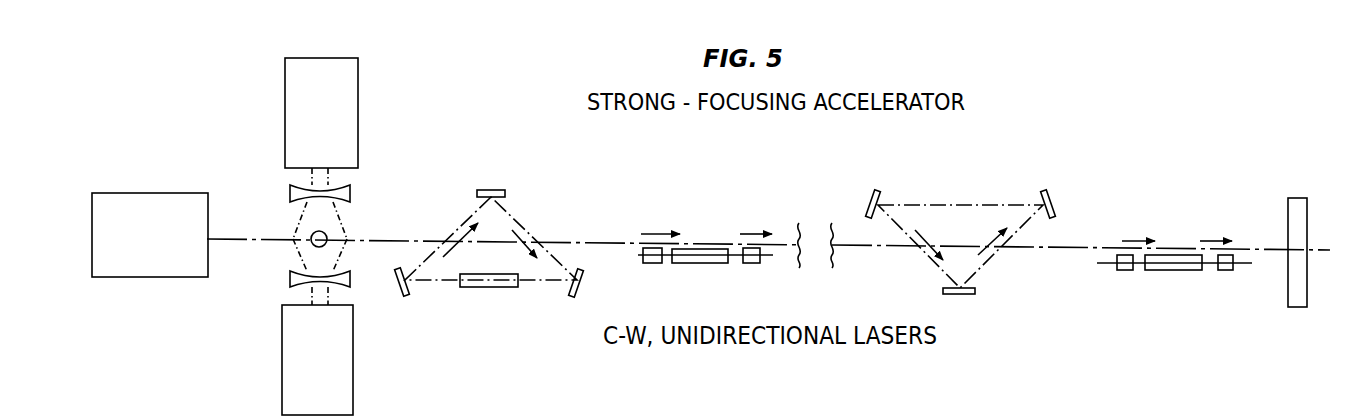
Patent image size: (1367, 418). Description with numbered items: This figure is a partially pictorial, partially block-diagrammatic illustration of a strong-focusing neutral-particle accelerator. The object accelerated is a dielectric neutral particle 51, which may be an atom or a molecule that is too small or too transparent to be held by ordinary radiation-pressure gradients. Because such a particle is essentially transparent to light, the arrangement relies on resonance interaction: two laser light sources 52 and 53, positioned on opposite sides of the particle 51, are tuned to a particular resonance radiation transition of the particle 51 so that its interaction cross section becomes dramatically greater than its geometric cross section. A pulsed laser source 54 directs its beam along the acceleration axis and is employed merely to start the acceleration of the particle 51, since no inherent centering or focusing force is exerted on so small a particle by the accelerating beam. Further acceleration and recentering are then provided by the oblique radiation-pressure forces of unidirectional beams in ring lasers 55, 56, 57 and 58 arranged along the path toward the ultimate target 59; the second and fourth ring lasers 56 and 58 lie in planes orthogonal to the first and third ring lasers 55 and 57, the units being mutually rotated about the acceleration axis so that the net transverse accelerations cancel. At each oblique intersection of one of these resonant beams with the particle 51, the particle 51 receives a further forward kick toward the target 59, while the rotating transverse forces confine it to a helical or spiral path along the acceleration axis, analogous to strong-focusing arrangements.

The dielectric neutral particle 51 is at (262, 295).
The laser light source 52 is at (358, 90).
The laser light source 53 is at (353, 385).
The pulsed laser source 54 is at (182, 196).
The ring laser 55 is at (505, 172).
The ring laser 56 is at (718, 299).
The ring laser 57 is at (978, 174).
The ring laser 58 is at (1198, 306).
The target 59 is at (1307, 293).